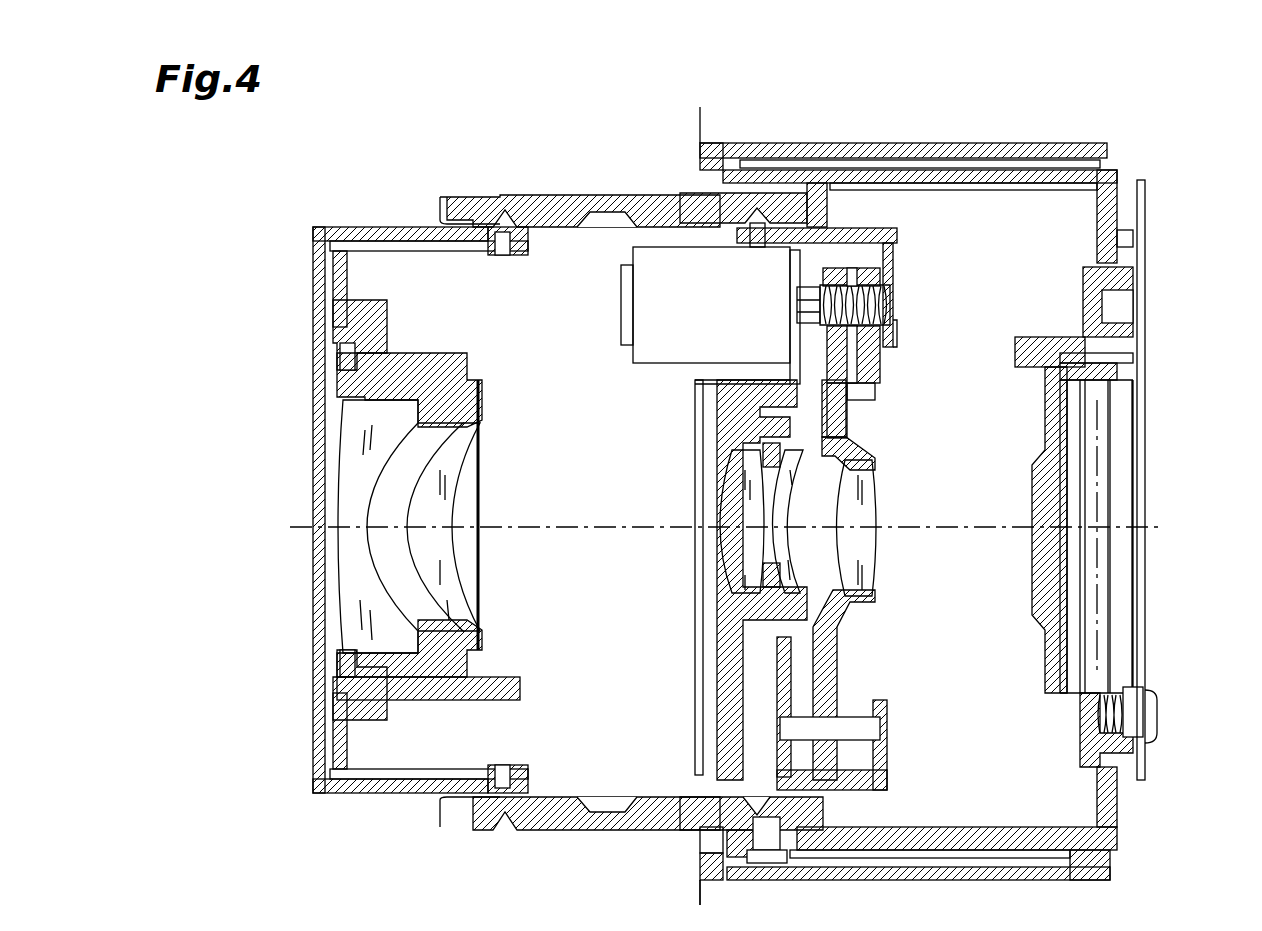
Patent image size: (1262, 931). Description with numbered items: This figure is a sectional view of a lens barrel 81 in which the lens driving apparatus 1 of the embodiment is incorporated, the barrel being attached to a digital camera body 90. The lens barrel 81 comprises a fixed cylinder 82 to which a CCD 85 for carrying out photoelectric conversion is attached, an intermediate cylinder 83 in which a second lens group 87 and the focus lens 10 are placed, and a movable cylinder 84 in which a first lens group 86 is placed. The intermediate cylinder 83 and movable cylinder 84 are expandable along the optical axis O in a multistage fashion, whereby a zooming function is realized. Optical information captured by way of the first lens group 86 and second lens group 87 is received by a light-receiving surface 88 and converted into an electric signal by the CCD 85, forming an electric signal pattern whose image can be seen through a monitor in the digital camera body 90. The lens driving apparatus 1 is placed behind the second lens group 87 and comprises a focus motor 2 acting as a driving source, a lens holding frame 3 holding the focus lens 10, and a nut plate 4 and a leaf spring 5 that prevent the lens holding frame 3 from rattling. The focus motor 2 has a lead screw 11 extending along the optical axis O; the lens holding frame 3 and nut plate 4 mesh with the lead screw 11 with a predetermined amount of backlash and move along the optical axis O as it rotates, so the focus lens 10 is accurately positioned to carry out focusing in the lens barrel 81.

The lens driving apparatus 1 is at (905, 282).
The focus motor 2 is at (672, 345).
The lens holding frame 3 is at (875, 600).
The nut plate 4 is at (880, 364).
The leaf spring 5 is at (853, 268).
The focus lens 10 is at (860, 512).
The lead screw 11 is at (893, 305).
The optical axis O is at (965, 524).
The lens barrel 81 is at (1152, 165).
The fixed cylinder 82 is at (905, 143).
The intermediate cylinder 83 is at (597, 195).
The movable cylinder 84 is at (355, 227).
The CCD 85 is at (1152, 505).
The first lens group 86 is at (486, 555).
The second lens group 87 is at (681, 575).
The light-receiving surface 88 is at (1050, 560).
The digital camera body 90 is at (700, 897).